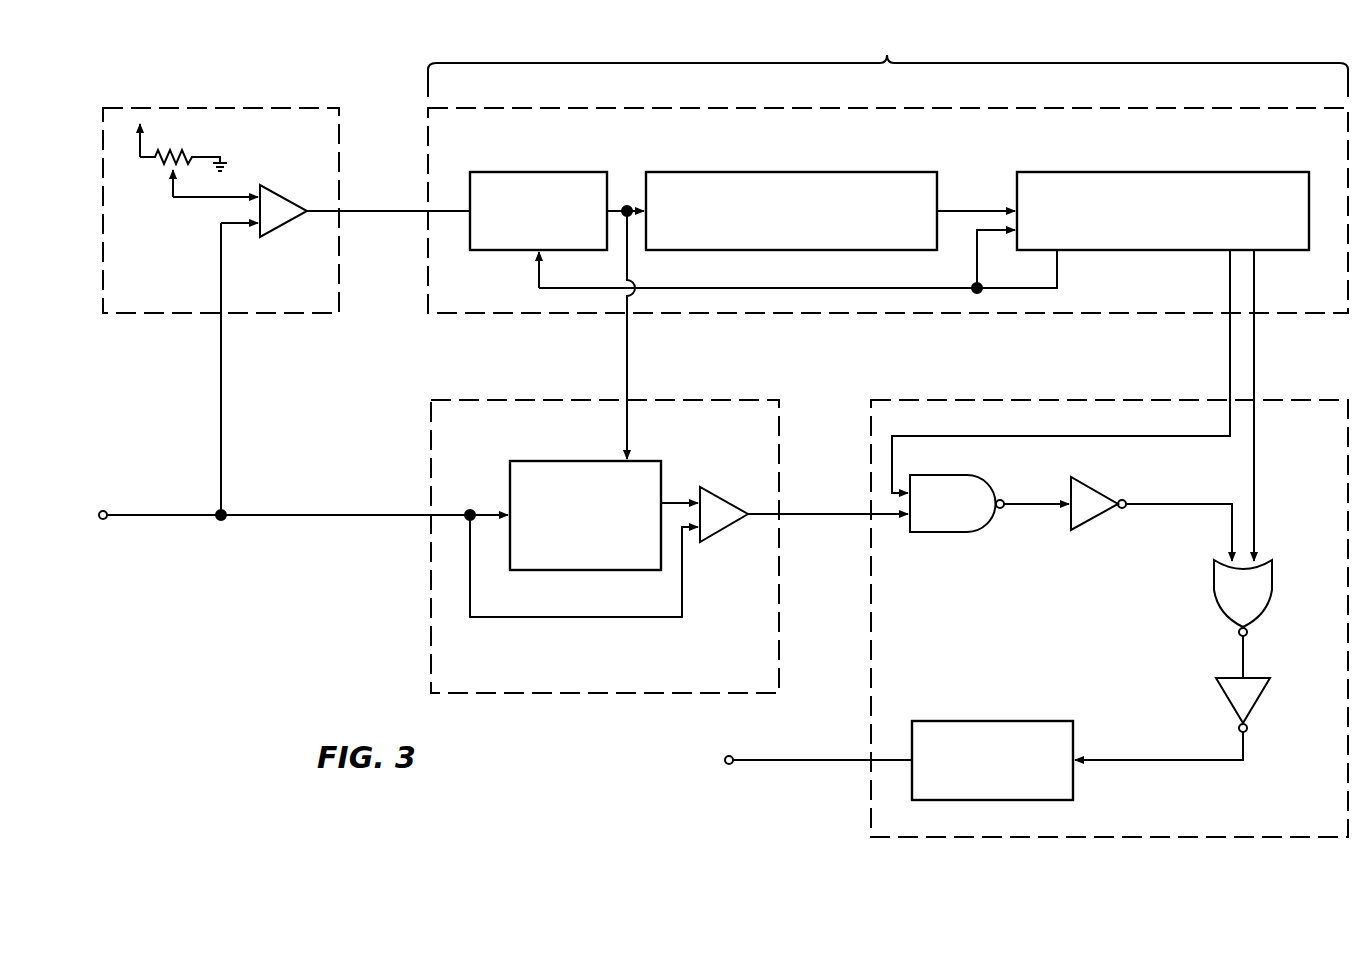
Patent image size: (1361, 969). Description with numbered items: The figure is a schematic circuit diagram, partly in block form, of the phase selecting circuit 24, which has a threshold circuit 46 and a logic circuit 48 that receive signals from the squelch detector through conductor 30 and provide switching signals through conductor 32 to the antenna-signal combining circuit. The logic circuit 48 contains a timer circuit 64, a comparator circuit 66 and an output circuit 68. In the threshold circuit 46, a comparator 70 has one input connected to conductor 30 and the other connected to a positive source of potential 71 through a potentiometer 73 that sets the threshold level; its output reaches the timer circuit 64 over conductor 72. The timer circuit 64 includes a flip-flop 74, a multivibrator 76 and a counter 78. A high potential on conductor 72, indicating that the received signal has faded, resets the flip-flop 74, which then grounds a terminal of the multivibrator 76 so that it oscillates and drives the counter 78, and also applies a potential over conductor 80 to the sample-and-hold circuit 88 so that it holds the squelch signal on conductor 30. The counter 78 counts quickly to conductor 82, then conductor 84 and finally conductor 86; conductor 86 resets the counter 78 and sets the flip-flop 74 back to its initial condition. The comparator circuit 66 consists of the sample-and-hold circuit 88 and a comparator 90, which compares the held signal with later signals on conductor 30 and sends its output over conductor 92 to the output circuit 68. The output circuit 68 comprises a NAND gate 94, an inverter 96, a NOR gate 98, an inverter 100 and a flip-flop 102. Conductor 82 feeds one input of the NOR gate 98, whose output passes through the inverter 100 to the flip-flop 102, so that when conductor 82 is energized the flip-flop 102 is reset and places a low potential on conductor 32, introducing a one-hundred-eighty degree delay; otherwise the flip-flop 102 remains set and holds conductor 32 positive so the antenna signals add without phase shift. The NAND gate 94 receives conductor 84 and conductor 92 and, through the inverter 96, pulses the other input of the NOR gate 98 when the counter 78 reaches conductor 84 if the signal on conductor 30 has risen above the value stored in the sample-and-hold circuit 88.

The phase selecting circuit 24 is at (692, 732).
The conductor 30 is at (168, 513).
The conductor 32 is at (815, 760).
The threshold circuit 46 is at (280, 105).
The logic circuit 48 is at (888, 60).
The timer circuit 64 is at (509, 285).
The comparator circuit 66 is at (688, 425).
The output circuit 68 is at (983, 413).
The comparator 70 is at (289, 204).
The positive source of potential 71 is at (143, 139).
The conductor 72 is at (388, 213).
The potentiometer 73 is at (167, 151).
The flip-flop 74 is at (557, 180).
The multivibrator 76 is at (815, 180).
The counter 78 is at (1193, 178).
The conductor 80 is at (628, 360).
The conductor 82 is at (1256, 335).
The conductor 84 is at (1229, 333).
The conductor 86 is at (1058, 268).
The sample-and-hold circuit 88 is at (603, 465).
The comparator 90 is at (728, 520).
The conductor 92 is at (822, 520).
The NAND gate 94 is at (967, 520).
The inverter 96 is at (1088, 518).
The NOR gate 98 is at (1260, 588).
The inverter 100 is at (1250, 700).
The flip-flop 102 is at (1012, 735).